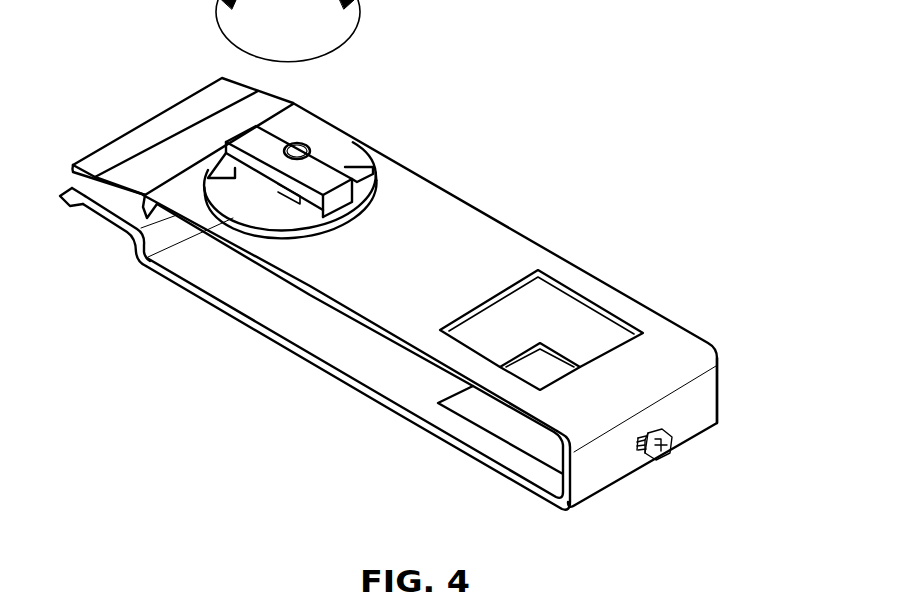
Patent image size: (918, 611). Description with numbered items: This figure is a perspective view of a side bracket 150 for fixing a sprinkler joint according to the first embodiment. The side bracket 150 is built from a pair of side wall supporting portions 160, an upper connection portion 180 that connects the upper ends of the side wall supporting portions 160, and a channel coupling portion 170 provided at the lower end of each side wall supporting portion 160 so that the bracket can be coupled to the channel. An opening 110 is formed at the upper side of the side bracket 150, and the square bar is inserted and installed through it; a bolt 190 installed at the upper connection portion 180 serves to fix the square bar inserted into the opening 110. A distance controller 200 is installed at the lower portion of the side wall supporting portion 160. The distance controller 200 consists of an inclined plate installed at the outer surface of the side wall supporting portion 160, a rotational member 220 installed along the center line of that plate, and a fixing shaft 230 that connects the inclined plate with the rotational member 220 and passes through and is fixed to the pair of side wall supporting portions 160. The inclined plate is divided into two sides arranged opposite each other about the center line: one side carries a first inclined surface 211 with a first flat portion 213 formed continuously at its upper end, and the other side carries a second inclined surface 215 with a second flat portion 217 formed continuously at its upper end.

The opening 110 is at (575, 330).
The side bracket 150 is at (237, 316).
The side wall supporting portion 160 is at (392, 301).
The channel coupling portion 170 is at (102, 213).
The upper connection portion 180 is at (704, 392).
The bolt 190 is at (672, 450).
The distance controller 200 is at (370, 160).
The first inclined surface 211 is at (257, 203).
The first flat portion 213 is at (217, 170).
The second inclined surface 215 is at (378, 160).
The second flat portion 217 is at (355, 180).
The rotational member 220 is at (245, 127).
The fixing shaft 230 is at (340, 157).